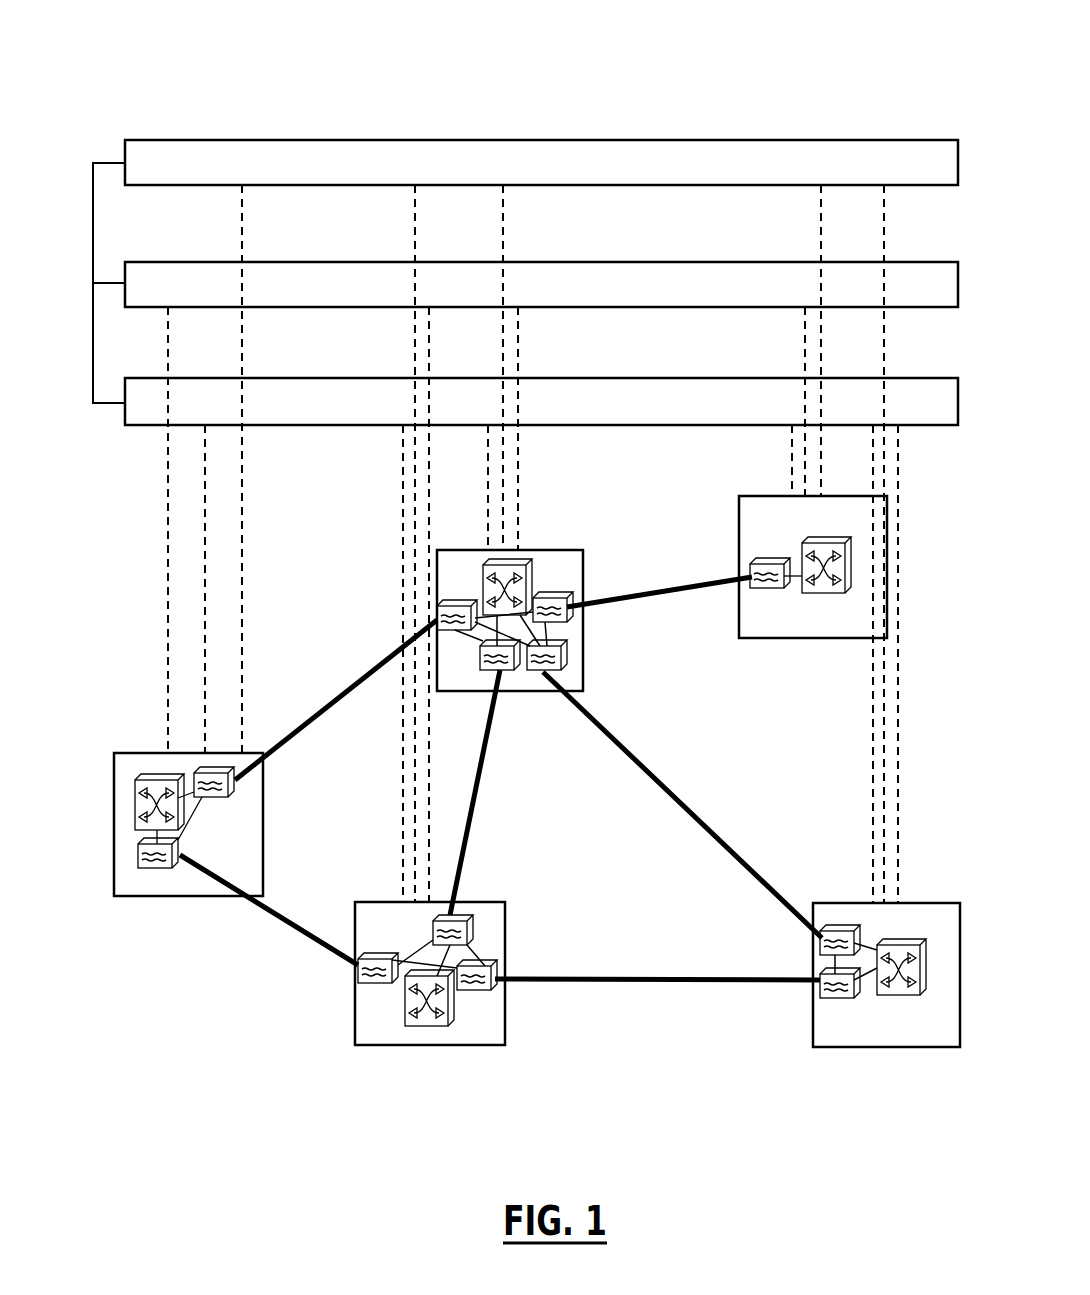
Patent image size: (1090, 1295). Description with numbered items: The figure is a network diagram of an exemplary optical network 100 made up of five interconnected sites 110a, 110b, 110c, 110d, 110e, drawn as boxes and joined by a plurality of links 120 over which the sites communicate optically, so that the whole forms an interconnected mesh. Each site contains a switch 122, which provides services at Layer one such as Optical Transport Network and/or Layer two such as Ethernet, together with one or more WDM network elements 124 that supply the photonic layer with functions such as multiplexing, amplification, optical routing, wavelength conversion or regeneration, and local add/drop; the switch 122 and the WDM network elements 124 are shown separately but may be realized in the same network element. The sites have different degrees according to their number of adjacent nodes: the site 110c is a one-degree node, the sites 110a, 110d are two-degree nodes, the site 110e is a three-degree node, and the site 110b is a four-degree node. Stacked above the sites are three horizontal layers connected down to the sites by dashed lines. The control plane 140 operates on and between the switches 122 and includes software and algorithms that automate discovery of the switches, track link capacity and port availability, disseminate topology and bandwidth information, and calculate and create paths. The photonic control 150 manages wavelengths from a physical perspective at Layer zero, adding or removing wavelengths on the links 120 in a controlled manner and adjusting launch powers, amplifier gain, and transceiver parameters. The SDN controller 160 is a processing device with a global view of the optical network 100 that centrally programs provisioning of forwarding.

The optical network 100 is at (627, 55).
The site 110a is at (114, 860).
The site 110b is at (548, 550).
The site 110c is at (828, 575).
The site 110d is at (862, 1047).
The site 110e is at (355, 1023).
The links 120 is at (330, 703).
The switch 122 is at (832, 537).
The WDM network element 124 is at (770, 558).
The control plane 140 is at (702, 378).
The photonic control 150 is at (702, 262).
The SDN controller 160 is at (702, 140).